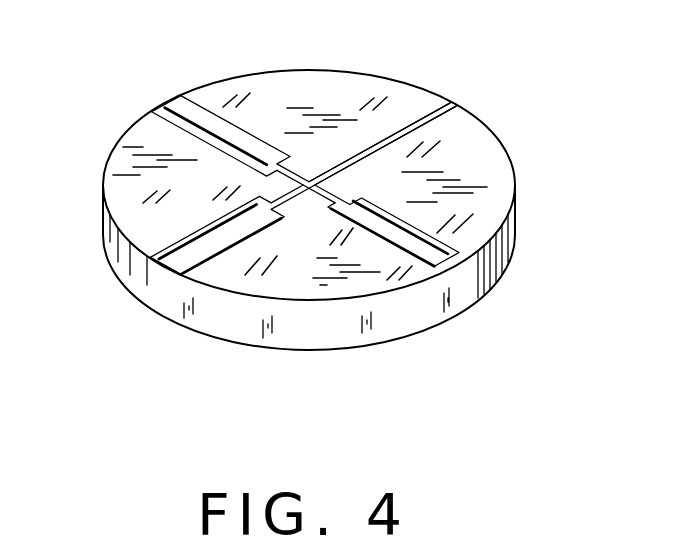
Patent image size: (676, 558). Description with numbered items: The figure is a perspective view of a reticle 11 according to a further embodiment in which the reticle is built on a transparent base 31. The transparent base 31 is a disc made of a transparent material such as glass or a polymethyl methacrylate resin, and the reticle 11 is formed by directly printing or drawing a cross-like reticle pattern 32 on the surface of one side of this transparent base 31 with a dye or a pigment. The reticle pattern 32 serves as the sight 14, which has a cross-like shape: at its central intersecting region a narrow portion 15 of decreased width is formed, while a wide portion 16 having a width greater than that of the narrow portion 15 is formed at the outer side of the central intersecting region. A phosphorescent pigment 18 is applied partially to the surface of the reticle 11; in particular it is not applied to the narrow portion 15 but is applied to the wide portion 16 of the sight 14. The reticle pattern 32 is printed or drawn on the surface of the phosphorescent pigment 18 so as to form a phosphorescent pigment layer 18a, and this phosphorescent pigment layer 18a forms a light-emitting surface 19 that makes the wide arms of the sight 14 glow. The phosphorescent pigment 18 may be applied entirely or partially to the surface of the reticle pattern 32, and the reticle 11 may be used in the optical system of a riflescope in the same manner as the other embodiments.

The reticle 11 is at (503, 118).
The sight 14 is at (312, 189).
The narrow portion 15 is at (305, 187).
The wide portion 16 is at (103, 207).
The phosphorescent pigment 18 is at (347, 226).
The phosphorescent pigment layer 18a is at (104, 207).
The light-emitting surface 19 is at (131, 246).
The transparent base 31 is at (513, 231).
The reticle pattern 32 is at (405, 123).